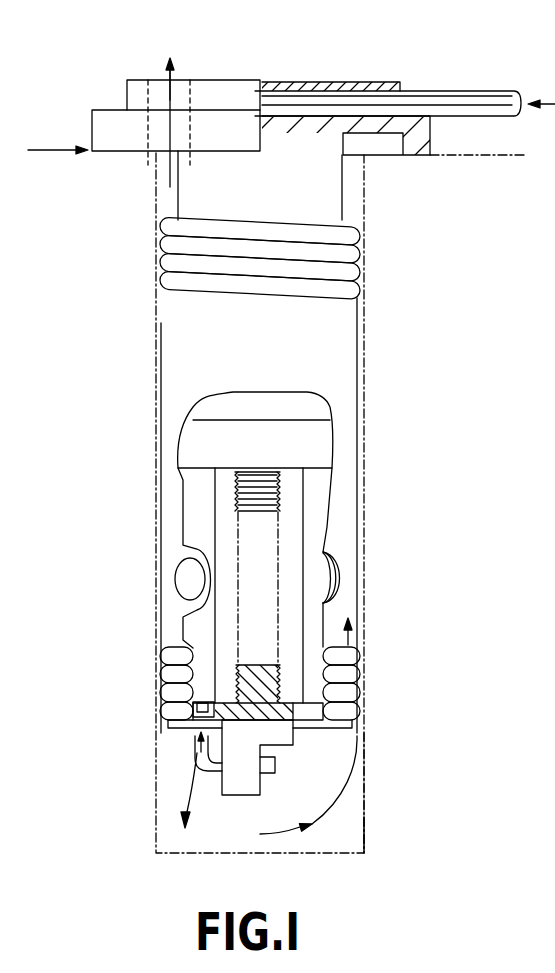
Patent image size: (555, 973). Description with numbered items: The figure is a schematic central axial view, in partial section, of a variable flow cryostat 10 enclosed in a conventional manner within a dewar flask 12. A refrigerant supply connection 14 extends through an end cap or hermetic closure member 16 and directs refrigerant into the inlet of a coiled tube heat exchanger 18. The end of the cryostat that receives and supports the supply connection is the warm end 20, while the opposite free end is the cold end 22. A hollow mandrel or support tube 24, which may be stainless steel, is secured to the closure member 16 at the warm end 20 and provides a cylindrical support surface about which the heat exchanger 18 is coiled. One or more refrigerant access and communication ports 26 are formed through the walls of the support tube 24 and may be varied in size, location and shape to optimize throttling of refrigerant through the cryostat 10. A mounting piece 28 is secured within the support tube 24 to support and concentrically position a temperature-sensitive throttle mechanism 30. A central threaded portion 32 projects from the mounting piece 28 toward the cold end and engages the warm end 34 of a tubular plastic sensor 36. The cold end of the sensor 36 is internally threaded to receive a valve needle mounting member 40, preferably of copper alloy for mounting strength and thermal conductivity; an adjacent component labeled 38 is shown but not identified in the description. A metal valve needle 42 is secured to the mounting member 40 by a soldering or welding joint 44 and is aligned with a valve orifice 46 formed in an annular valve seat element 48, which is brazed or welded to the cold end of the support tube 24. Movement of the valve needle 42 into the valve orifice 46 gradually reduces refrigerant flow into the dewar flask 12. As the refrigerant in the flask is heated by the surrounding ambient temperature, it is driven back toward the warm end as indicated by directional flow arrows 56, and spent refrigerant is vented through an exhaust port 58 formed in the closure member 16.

The variable flow cryostat 10 is at (406, 44).
The dewar flask 12 is at (160, 333).
The refrigerant supply connection 14 is at (455, 90).
The hermetic closure member 16 is at (413, 143).
The coiled tube heat exchanger 18 is at (360, 250).
The warm end 20 is at (58, 134).
The cold end 22 is at (389, 757).
The support tube 24 is at (183, 528).
The refrigerant access and communication ports 26 is at (190, 578).
The mounting piece 28 is at (313, 445).
The temperature-sensitive throttle mechanism 30 is at (337, 575).
The central threaded portion 32 is at (283, 497).
The warm end of sensor 34 is at (226, 500).
The tubular plastic sensor 36 is at (192, 622).
The nut 38 is at (280, 688).
The valve needle mounting member 40 is at (240, 796).
The valve needle 42 is at (197, 755).
The soldering or welding joint 44 is at (286, 795).
The valve orifice 46 is at (195, 667).
The annular valve seat element 48 is at (318, 729).
The directional flow arrows 56 is at (170, 168).
The exhaust port 58 is at (183, 85).